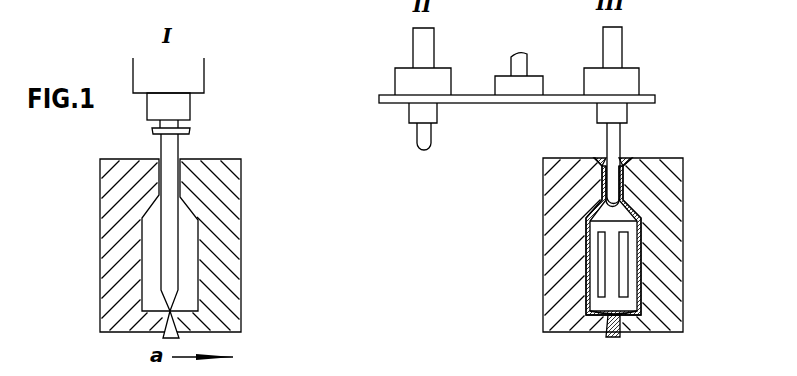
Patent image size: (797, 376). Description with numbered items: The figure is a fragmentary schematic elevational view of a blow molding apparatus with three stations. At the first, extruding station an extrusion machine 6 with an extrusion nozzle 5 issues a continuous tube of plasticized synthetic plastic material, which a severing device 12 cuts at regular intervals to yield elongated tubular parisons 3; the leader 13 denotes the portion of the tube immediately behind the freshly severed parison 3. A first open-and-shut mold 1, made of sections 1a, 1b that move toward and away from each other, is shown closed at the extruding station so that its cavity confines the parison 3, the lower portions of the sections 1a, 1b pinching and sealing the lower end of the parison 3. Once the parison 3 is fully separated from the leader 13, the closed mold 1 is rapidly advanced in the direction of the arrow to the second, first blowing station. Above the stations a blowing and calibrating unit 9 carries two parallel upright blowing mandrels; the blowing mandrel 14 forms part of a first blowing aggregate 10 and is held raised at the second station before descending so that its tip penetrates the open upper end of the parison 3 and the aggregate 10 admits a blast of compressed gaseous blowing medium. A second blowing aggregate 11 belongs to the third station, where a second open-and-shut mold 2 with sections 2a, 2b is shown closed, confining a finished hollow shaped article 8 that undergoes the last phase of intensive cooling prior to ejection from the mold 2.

The first open-and-shut mold 1 is at (250, 202).
The mold section 1a is at (117, 263).
The mold section 1b is at (238, 267).
The second open-and-shut mold 2 is at (534, 220).
The mold section 2a is at (552, 268).
The mold section 2b is at (685, 270).
The tubular parison 3 is at (168, 291).
The extrusion nozzle 5 is at (184, 110).
The extrusion machine 6 is at (195, 81).
The finished hollow shaped article 8 is at (598, 302).
The blowing and calibrating unit 9 is at (508, 108).
The first blowing aggregate 10 is at (398, 78).
The second blowing aggregate 11 is at (630, 80).
The severing device 12 is at (190, 134).
The leader of the tube 13 is at (157, 127).
The blowing mandrel 14 is at (422, 133).